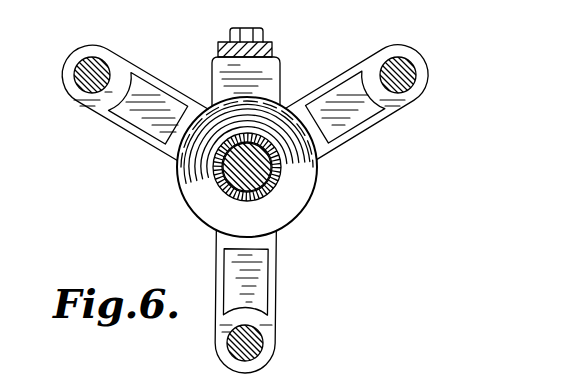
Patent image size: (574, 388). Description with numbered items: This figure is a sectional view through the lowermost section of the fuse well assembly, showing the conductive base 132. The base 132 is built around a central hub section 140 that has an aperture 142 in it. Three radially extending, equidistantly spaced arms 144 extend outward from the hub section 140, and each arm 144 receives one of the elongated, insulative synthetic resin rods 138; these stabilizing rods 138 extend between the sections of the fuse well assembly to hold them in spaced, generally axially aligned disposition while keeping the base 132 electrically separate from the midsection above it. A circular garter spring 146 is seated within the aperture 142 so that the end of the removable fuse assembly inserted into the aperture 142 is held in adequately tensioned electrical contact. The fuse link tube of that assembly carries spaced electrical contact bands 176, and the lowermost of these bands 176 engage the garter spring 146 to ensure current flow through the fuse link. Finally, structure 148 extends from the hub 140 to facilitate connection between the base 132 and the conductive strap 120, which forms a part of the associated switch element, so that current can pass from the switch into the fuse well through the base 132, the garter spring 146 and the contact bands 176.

The conductive strap 120 is at (267, 43).
The conductive base 132 is at (256, 193).
The insulative synthetic resin rods 138 is at (90, 57).
The central hub section 140 is at (304, 213).
The aperture 142 is at (277, 175).
The arms 144 is at (119, 126).
The circular garter spring 146 is at (217, 187).
The structure 148 is at (270, 77).
The electrical contact bands 176 is at (232, 152).